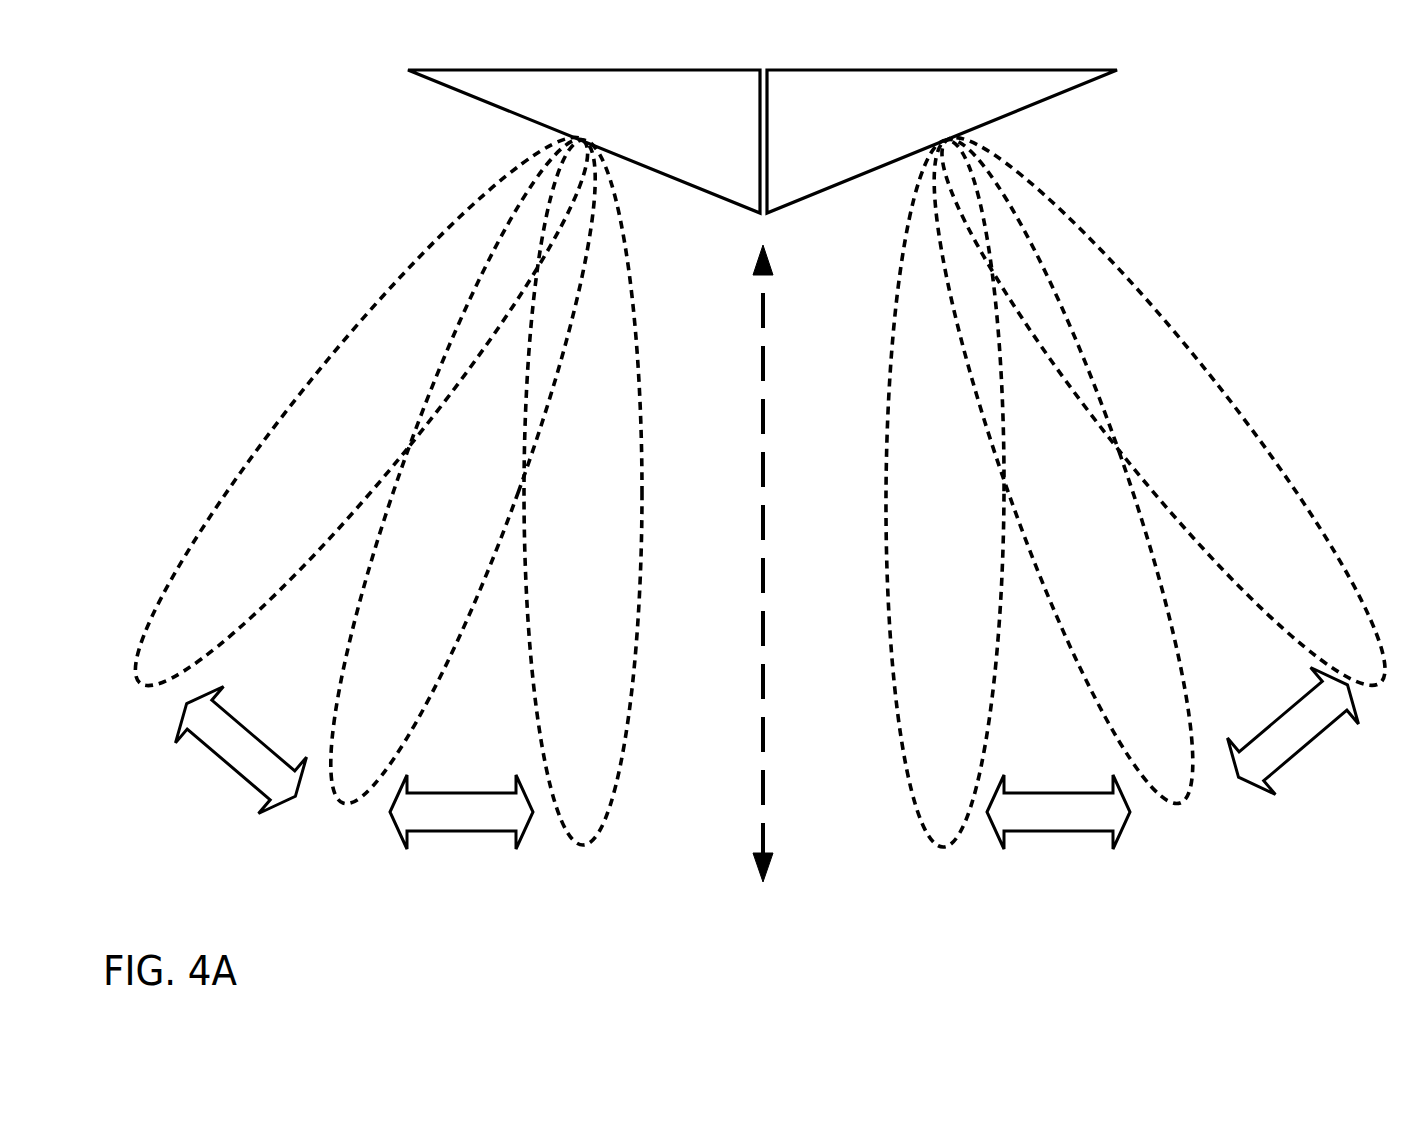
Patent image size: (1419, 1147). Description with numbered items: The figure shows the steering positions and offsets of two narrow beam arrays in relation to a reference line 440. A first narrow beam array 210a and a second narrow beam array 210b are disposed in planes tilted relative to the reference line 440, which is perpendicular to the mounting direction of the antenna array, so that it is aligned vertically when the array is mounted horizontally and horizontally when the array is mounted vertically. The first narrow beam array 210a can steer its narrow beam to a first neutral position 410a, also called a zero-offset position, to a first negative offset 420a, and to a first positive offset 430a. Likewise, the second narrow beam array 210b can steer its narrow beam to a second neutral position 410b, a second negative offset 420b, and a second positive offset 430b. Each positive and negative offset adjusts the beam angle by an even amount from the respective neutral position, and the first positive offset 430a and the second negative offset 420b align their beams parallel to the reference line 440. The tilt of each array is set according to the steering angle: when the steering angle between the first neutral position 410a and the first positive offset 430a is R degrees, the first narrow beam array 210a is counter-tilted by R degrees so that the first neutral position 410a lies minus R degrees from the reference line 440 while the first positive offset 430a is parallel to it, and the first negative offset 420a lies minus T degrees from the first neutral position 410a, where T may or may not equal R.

The first narrow beam array 210a is at (700, 117).
The second narrow beam array 210b is at (883, 117).
The first neutral position 410a is at (463, 471).
The second neutral position 410b is at (1063, 471).
The first negative offset 420a is at (361, 412).
The second negative offset 420b is at (945, 494).
The first positive offset 430a is at (583, 492).
The second positive offset 430b is at (1160, 411).
The reference line 440 is at (762, 425).